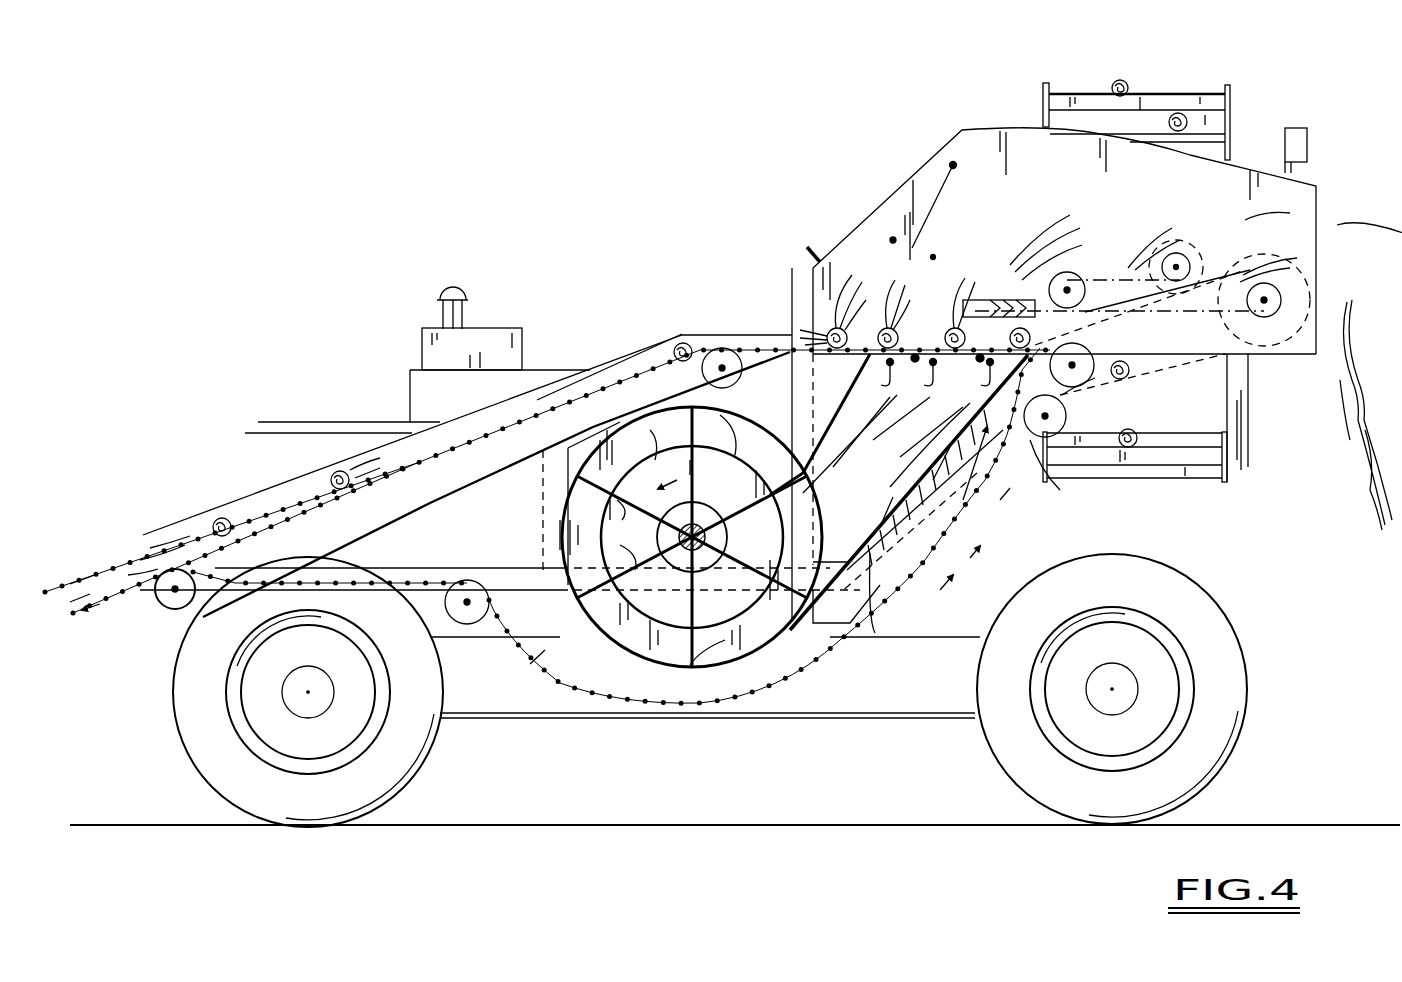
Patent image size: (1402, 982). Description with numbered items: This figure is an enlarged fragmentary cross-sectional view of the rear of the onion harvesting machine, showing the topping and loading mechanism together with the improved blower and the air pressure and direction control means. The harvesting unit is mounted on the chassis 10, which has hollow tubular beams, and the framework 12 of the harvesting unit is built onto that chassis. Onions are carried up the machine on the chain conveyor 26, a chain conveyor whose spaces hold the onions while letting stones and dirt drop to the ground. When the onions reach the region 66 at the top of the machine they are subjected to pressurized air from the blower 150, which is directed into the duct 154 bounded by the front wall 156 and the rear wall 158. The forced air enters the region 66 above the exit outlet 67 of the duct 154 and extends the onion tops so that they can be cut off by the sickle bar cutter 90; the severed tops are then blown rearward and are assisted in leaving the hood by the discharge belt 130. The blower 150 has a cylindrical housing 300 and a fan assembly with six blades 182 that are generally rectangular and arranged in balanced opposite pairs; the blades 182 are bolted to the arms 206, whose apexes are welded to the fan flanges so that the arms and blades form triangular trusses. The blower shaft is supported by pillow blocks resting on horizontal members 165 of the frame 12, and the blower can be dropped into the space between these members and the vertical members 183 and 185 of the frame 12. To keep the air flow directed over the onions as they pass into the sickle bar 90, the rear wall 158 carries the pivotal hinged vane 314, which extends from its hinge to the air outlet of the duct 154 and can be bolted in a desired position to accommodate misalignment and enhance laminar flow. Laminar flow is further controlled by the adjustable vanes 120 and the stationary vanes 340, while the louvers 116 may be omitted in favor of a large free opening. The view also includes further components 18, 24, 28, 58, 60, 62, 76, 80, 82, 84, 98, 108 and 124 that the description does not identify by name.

The chassis 10 is at (886, 720).
The framework 12 is at (527, 592).
The wheels 18 is at (412, 766).
The conveyor housing 24 is at (986, 128).
The chain conveyor 26 is at (436, 466).
The pickup 28 is at (215, 508).
The belt 58 is at (1238, 376).
The roller 60 is at (1305, 284).
The roller 62 is at (1202, 277).
The region 66 is at (995, 245).
The exit outlet 67 is at (1003, 352).
The post 76 is at (833, 242).
The upper bin 80 is at (1205, 90).
The lower bin 82 is at (1190, 425).
The support 84 is at (1249, 420).
The sickle bar cutter 90 is at (1066, 273).
The bracket 98 is at (1308, 142).
The deflector 108 is at (876, 640).
The louvers 116 is at (947, 500).
The adjustable vanes 120 is at (833, 311).
The air stream 124 is at (937, 403).
The discharge belt 130 is at (1138, 256).
The blower 150 is at (556, 512).
The duct 154 is at (872, 497).
The front wall 156 is at (812, 414).
The rear wall 158 is at (808, 528).
The horizontal member 165 is at (657, 607).
The blades 182 is at (684, 410).
The vertical member 183 is at (543, 550).
The vertical member 185 is at (802, 542).
The arms 206 is at (755, 498).
The cylindrical housing 300 is at (604, 440).
The hinged vane 314 is at (1035, 478).
The stationary vanes 340 is at (926, 313).